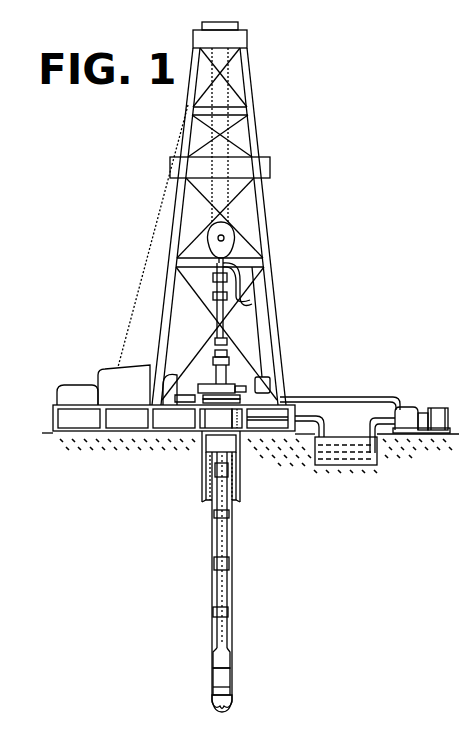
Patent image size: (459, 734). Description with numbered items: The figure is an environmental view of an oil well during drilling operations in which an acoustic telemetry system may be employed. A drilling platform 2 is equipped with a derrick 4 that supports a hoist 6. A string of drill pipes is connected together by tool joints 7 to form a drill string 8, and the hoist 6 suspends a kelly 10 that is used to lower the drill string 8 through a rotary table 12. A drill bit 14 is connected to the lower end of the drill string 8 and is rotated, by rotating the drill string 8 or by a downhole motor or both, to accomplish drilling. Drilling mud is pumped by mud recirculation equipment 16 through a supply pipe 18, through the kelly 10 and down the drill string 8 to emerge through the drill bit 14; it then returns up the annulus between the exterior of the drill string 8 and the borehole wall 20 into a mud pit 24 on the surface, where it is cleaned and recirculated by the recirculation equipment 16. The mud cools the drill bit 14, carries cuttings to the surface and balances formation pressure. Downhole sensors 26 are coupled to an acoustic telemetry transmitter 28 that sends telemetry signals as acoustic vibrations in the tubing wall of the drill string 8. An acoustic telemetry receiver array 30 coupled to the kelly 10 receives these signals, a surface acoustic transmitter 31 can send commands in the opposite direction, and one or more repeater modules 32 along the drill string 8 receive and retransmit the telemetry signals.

The drilling platform 2 is at (53, 412).
The derrick 4 is at (255, 131).
The hoist 6 is at (232, 237).
The tool joints 7 is at (215, 515).
The drill string 8 is at (220, 543).
The kelly 10 is at (222, 285).
The rotary table 12 is at (235, 382).
The drill bit 14 is at (232, 698).
The mud recirculation equipment 16 is at (402, 410).
The supply pipe 18 is at (353, 397).
The borehole wall 20 is at (232, 548).
The mud pit 24 is at (332, 455).
The downhole sensors 26 is at (215, 678).
The acoustic telemetry transmitter 28 is at (215, 662).
The acoustic telemetry receiver array 30 is at (228, 345).
The surface acoustic transmitter 31 is at (237, 295).
The repeater modules 32 is at (215, 567).